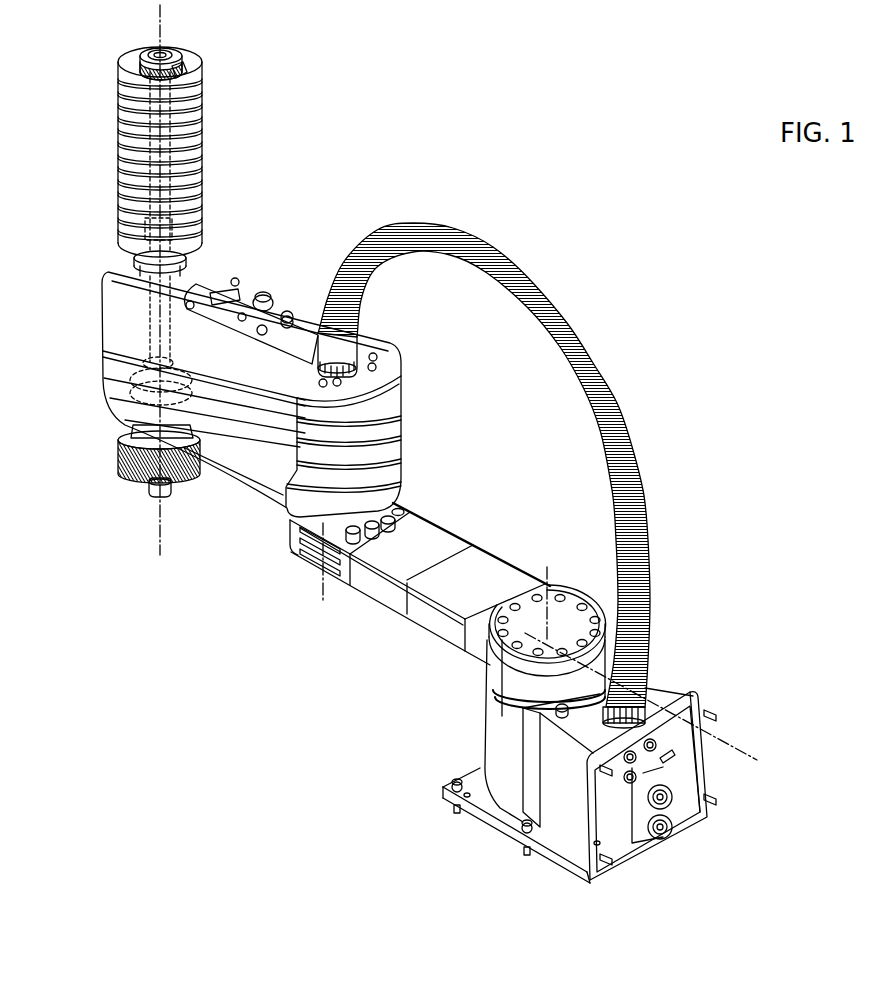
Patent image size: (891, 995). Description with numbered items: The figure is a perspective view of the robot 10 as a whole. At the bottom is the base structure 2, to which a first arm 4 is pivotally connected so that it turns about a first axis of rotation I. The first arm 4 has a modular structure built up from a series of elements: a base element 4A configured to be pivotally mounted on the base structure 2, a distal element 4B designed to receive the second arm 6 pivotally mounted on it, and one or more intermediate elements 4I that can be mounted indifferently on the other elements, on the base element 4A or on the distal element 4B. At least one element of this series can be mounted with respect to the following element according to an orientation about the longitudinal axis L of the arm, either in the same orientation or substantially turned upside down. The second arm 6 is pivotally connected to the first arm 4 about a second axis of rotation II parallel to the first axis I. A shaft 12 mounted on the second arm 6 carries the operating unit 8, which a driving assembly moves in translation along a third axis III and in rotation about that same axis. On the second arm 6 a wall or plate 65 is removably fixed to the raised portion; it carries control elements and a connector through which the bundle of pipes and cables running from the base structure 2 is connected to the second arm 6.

The base structure 2 is at (708, 834).
The first arm 4 is at (480, 537).
The base element 4A is at (577, 587).
The distal element 4B is at (287, 523).
The intermediate element 4I is at (388, 597).
The second arm 6 is at (411, 407).
The operating unit 8 is at (176, 491).
The robot 10 is at (297, 200).
The shaft 12 is at (117, 167).
The plate 65 is at (297, 333).
The first axis of rotation I is at (547, 567).
The second axis of rotation II is at (323, 582).
The third axis III is at (158, 521).
The longitudinal axis L is at (737, 744).